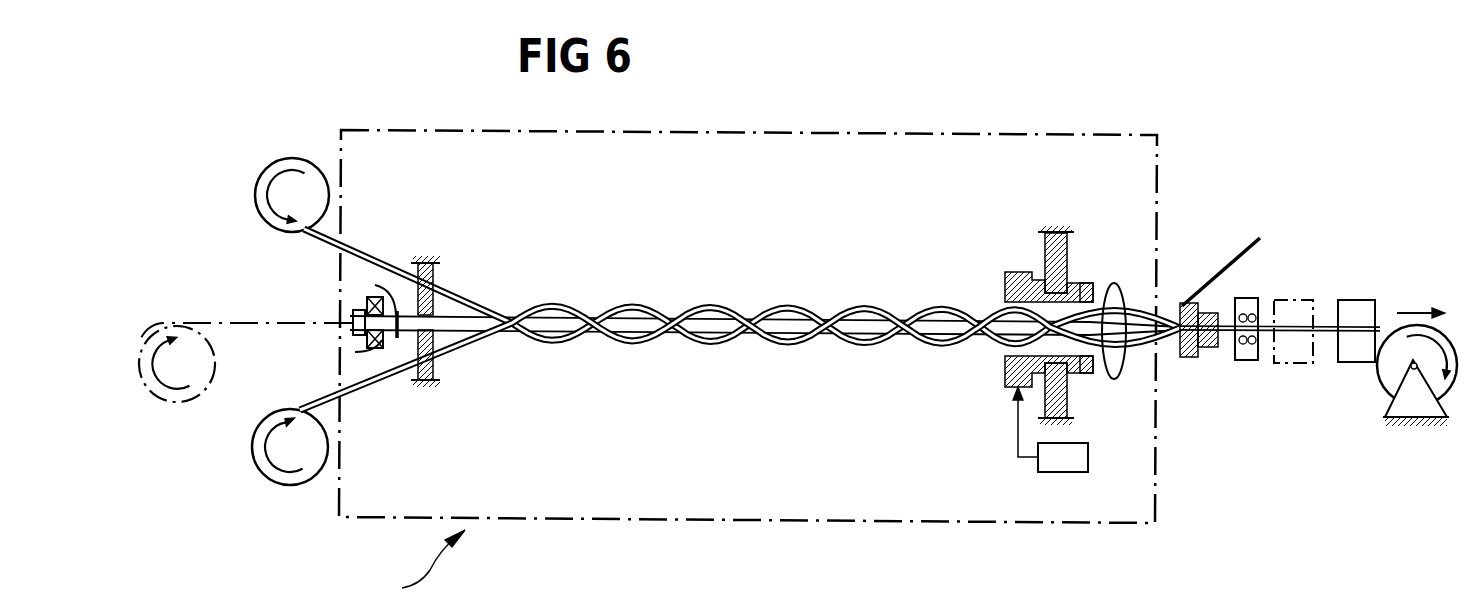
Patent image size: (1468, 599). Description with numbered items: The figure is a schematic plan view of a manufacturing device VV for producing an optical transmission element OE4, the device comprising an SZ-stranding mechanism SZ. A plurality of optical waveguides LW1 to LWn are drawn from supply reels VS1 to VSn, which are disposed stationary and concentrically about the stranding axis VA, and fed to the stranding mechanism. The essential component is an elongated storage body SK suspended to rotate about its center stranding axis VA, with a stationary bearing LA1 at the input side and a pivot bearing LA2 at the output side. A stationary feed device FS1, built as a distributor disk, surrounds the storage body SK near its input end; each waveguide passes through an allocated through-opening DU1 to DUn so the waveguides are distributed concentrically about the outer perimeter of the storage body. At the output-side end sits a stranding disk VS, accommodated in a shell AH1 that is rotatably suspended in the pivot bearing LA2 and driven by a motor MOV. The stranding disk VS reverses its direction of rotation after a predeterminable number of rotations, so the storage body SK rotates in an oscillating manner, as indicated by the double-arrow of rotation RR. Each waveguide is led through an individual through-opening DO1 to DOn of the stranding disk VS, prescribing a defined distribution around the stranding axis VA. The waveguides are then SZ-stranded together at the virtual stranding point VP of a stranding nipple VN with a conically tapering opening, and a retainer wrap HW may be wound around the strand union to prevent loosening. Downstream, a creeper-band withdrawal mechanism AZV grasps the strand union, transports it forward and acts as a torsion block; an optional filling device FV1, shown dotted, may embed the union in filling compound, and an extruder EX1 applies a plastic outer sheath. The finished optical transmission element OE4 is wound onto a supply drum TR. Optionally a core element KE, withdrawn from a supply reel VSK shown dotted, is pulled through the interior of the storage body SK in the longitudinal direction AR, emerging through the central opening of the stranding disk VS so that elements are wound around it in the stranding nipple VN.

The SZ-stranding mechanism SZ is at (776, 130).
The core element KE is at (228, 320).
The supply reel VSK is at (180, 400).
The supply reel VS1 is at (308, 173).
The supply reel VSn is at (305, 488).
The stranding axis VA is at (375, 285).
The bearing LA1 is at (355, 352).
The storage body SK is at (557, 343).
The optical waveguide LW1 is at (360, 253).
The optical waveguide LWn is at (357, 388).
The feed device FS1 is at (465, 295).
The through-opening DU1 is at (437, 287).
The through-opening DUn is at (437, 363).
The manufacturing device VV is at (419, 564).
The shell AH1 is at (1005, 280).
The pivot bearing LA2 is at (1045, 250).
The through-opening DO1 is at (1100, 290).
The through-opening DOn is at (1088, 380).
The stranding disk VS is at (1087, 378).
The motor MOV is at (1038, 440).
The double-arrow of rotation RR is at (1125, 293).
The optical transmission element OE4 is at (1388, 322).
The virtual stranding point VP is at (1185, 357).
The stranding nipple VN is at (1205, 347).
The retainer wrap HW is at (1245, 252).
The withdrawal mechanism AZV is at (1248, 362).
The filling device FV1 is at (1292, 300).
The extruder EX1 is at (1355, 300).
The longitudinal direction AR is at (1408, 313).
The supply drum TR is at (1385, 382).